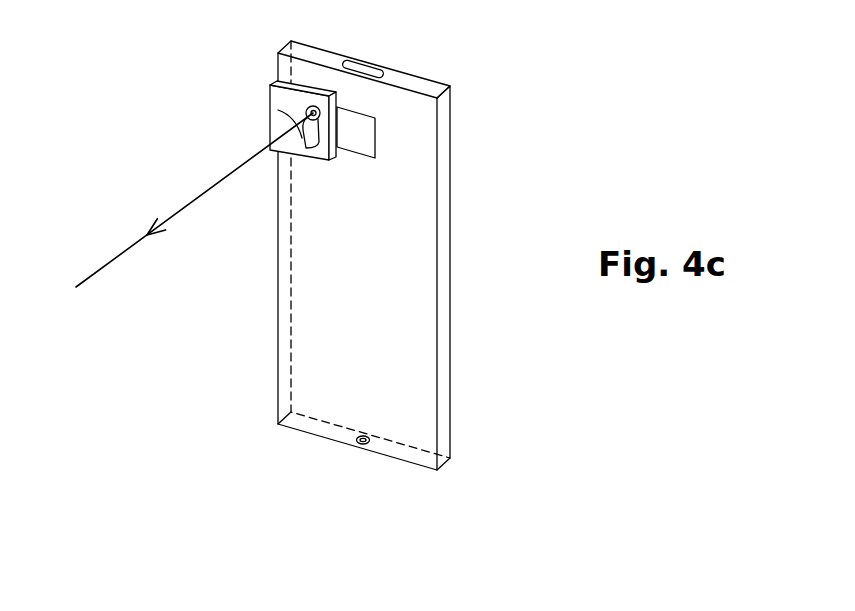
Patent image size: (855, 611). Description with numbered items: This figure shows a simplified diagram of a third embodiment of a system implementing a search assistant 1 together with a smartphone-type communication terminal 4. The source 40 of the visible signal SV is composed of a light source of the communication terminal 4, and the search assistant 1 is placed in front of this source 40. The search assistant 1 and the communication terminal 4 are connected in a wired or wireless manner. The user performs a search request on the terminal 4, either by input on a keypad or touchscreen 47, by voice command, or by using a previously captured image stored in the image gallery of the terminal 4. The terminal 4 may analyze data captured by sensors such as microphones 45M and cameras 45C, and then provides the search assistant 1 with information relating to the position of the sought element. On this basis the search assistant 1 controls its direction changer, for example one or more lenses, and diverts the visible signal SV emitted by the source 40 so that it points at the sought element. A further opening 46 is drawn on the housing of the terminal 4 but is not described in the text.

The mobile device housing 4 is at (447, 45).
The side face of housing 47 is at (452, 270).
The top slot 46 is at (363, 68).
The bottom slot/connector 45M is at (341, 438).
The camera cavity/block 45C is at (372, 135).
The camera module 1 is at (277, 118).
The camera lens 40 is at (307, 108).
The sight vector SV is at (197, 193).